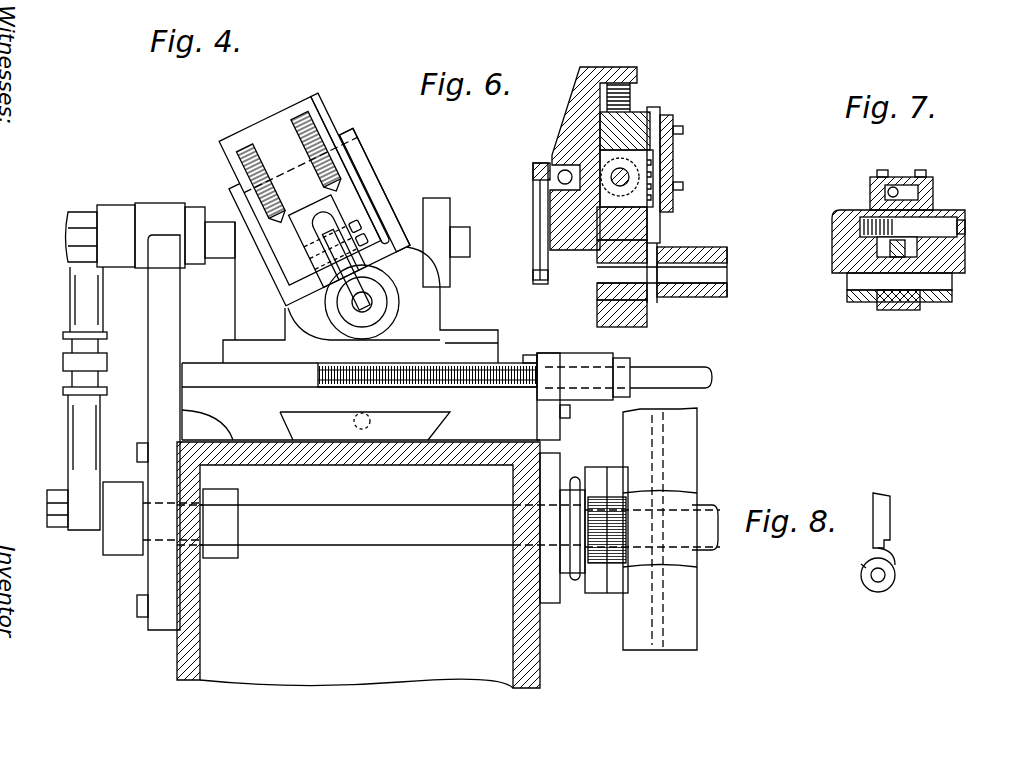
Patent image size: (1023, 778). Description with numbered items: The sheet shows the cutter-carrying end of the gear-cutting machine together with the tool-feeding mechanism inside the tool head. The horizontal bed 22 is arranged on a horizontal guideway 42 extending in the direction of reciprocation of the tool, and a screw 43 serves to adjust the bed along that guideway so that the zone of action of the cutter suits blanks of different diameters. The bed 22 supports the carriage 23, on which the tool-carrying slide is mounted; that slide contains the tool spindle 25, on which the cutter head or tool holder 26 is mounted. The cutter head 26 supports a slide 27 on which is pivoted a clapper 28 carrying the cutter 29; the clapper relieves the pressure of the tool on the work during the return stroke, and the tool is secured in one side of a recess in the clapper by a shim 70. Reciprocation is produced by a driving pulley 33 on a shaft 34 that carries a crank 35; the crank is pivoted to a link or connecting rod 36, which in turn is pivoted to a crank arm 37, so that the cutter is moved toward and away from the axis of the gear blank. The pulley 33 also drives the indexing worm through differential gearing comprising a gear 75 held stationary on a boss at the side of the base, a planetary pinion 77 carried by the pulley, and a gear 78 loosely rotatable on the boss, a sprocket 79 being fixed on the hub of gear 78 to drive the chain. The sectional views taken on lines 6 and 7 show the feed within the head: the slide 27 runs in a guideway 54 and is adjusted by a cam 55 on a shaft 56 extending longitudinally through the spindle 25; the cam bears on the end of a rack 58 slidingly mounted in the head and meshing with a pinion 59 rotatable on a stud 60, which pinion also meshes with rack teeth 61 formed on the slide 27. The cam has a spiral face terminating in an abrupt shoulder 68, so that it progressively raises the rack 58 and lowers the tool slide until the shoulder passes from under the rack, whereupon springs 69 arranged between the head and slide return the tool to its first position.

In FIG. 4, the section line 6— 6 is at (313, 225).
In FIG. 6, the section line 7— 7 is at (558, 177).
In FIG. 4, the bed 22 is at (457, 405).
In FIG. 4, the carriage 23 is at (440, 318).
In FIG. 6, the tool spindle 25 is at (729, 257).
In FIG. 4, the cutter head 26 is at (362, 170).
In FIG. 6, the cutter head 26 is at (674, 118).
In FIG. 7, the cutter head 26 is at (966, 245).
In FIG. 4, the slide 27 is at (342, 138).
In FIG. 6, the slide 27 is at (578, 125).
In FIG. 4, the clapper 28 is at (444, 227).
In FIG. 6, the clapper 28 is at (533, 213).
In FIG. 7, the clapper 28 is at (925, 303).
In FIG. 4, the cutter 29 is at (375, 275).
In FIG. 6, the cutter 29 is at (543, 283).
In FIG. 7, the cutter 29 is at (905, 308).
In FIG. 4, the driving pulley 33 is at (670, 648).
In FIG. 4, the shaft 34 is at (343, 535).
In FIG. 4, the crank 35 is at (120, 555).
In FIG. 4, the link 36 is at (68, 445).
In FIG. 4, the crank arm 37 is at (115, 215).
In FIG. 4, the horizontal guideway 42 is at (335, 418).
In FIG. 4, the screw 43 is at (428, 390).
In FIG. 7, the guideway 54 is at (840, 275).
In FIG. 6, the cam 55 is at (688, 252).
In FIG. 8, the cam 55 is at (862, 565).
In FIG. 6, the shaft 56 is at (710, 280).
In FIG. 8, the shaft 56 is at (872, 578).
In FIG. 4, the rack 58 is at (212, 225).
In FIG. 6, the rack 58 is at (661, 226).
In FIG. 7, the rack 58 is at (875, 188).
In FIG. 8, the rack 58 is at (891, 512).
In FIG. 6, the pinion 59 is at (660, 192).
In FIG. 7, the pinion 59 is at (870, 195).
In FIG. 6, the stud 60 is at (655, 177).
In FIG. 7, the stud 60 is at (966, 226).
In FIG. 6, the rack teeth 61 is at (560, 152).
In FIG. 7, the rack teeth 61 is at (838, 235).
In FIG. 8, the abrupt shoulder 68 is at (896, 563).
In FIG. 4, the springs 69 is at (322, 127).
In FIG. 6, the springs 69 is at (632, 92).
In FIG. 4, the shim 70 is at (283, 283).
In FIG. 7, the shim 70 is at (890, 310).
In FIG. 4, the gear 75 is at (612, 467).
In FIG. 4, the planetary pinion 77 is at (597, 590).
In FIG. 4, the gear 78 is at (596, 470).
In FIG. 4, the sprocket 79 is at (575, 480).